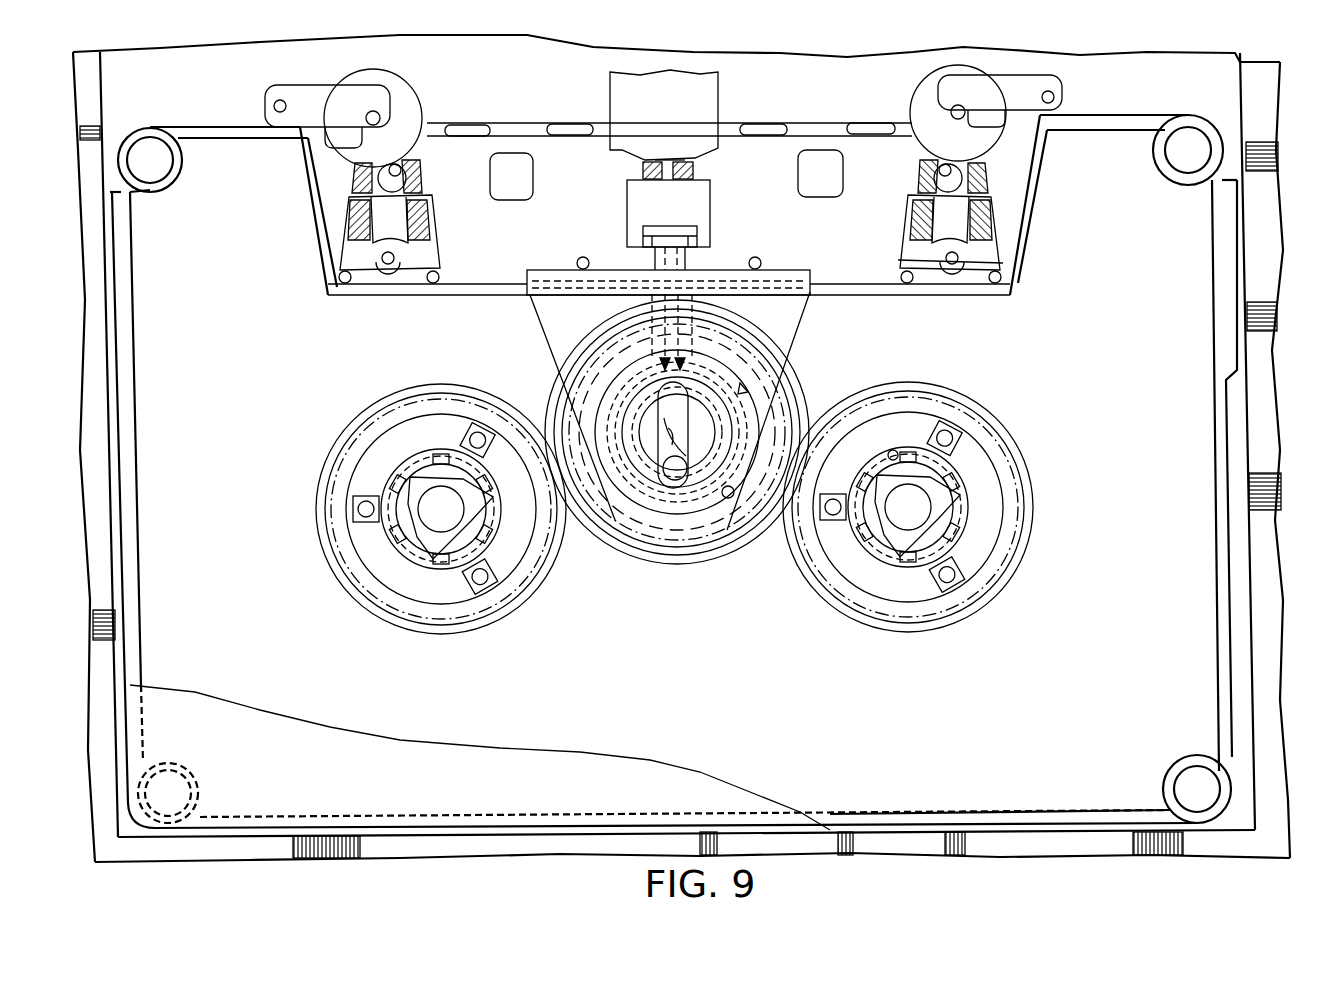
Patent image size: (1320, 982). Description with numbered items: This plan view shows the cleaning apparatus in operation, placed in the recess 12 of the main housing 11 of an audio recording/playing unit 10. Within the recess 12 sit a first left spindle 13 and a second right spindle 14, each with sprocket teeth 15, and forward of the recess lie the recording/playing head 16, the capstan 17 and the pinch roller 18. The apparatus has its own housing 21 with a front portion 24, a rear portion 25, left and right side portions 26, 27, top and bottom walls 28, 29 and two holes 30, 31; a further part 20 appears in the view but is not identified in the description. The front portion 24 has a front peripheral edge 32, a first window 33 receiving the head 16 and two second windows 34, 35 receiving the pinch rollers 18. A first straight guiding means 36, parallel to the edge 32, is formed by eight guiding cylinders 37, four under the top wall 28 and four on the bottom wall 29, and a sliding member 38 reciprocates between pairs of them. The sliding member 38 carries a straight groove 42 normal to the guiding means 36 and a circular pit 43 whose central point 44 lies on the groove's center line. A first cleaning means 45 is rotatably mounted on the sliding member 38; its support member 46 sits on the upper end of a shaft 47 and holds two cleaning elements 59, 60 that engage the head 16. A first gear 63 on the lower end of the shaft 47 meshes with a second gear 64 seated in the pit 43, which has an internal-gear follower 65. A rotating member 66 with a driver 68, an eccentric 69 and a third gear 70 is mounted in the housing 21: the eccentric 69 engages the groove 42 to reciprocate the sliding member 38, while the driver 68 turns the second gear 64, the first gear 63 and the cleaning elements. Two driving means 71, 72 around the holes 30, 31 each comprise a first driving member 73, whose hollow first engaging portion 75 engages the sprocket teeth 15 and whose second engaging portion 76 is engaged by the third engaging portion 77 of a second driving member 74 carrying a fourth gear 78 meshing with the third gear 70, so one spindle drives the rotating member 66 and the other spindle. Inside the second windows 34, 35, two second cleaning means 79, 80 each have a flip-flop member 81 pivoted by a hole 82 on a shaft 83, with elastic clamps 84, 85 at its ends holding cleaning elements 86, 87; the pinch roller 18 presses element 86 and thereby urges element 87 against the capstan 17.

The unit 10 is at (55, 218).
The main housing 11 is at (1280, 410).
The recess 12 is at (133, 440).
The first left spindle 13 is at (437, 500).
The second right spindle 14 is at (912, 500).
The sprocket teeth 15 is at (432, 553).
The recording/playing head 16 is at (720, 86).
The capstan 17 is at (420, 162).
The pinch roller 18 is at (412, 102).
The frame top member 20 is at (166, 118).
The housing 21 is at (1232, 453).
The front portion 24 is at (243, 128).
The rear portion 25 is at (1020, 812).
The left side portion 26 is at (140, 521).
The right side portion 27 is at (1213, 475).
The top wall 28 is at (190, 706).
The bottom wall 29 is at (201, 625).
The hole 30 is at (510, 530).
The hole 31 is at (895, 448).
The front peripheral edge 32 is at (767, 120).
The first window 33 is at (605, 120).
The second window 34 is at (438, 125).
The second window 35 is at (860, 118).
The first straight guiding means 36 is at (541, 230).
The guiding cylinders 37 is at (553, 270).
The sliding member 38 is at (530, 300).
The straight groove 42 is at (645, 472).
The circular pit 43 is at (748, 387).
The central point 44 is at (690, 478).
The first cleaning means 45 is at (676, 152).
The support member 46 is at (703, 213).
The shaft 47 is at (688, 263).
The cleaning element 59 is at (643, 168).
The cleaning element 60 is at (694, 169).
The first gear 63 is at (585, 365).
The second gear 64 is at (773, 350).
The follower 65 is at (610, 432).
The rotating member 66 is at (648, 540).
The driver 68 is at (770, 402).
The eccentric 69 is at (681, 462).
The third gear 70 is at (680, 535).
The driving means 71 is at (318, 456).
The driving means 72 is at (980, 380).
The first driving member 73 is at (390, 575).
The second driving member 74 is at (965, 512).
The first engaging portion 75 is at (403, 555).
The second engaging portion 76 is at (506, 592).
The third engaging portion 77 is at (489, 602).
The fourth gear 78 is at (461, 634).
The second cleaning means 79 is at (450, 226).
The second cleaning means 80 is at (893, 222).
The flip-flop member 81 is at (353, 255).
The hole 82 is at (383, 263).
The shaft 83 is at (394, 263).
The elastic clamp 84 is at (346, 199).
The elastic clamp 85 is at (435, 205).
The cleaning element 86 is at (357, 191).
The cleaning element 87 is at (427, 182).